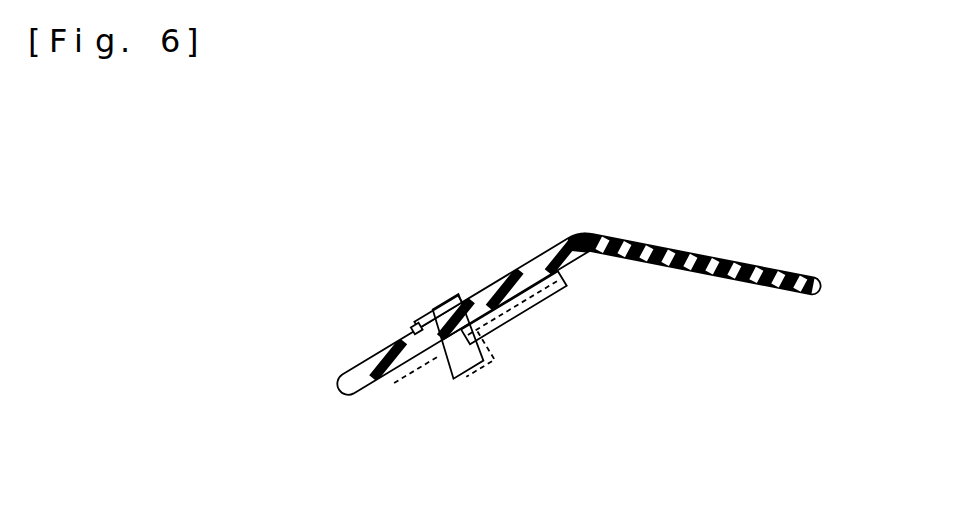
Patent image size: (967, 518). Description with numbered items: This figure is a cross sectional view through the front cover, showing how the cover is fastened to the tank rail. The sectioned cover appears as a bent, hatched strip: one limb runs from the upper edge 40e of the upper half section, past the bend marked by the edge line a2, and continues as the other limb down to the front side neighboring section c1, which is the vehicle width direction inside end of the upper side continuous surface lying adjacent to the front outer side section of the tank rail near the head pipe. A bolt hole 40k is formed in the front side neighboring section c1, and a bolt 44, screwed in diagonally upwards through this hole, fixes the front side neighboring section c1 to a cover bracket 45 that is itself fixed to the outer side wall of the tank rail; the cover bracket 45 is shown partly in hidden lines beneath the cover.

The bolt 44 is at (434, 302).
The edge line a2 is at (592, 234).
The upper edge 40e is at (822, 280).
The front side neighboring section c1 is at (362, 363).
The bolt hole 40k is at (452, 379).
The cover bracket 45 is at (537, 303).